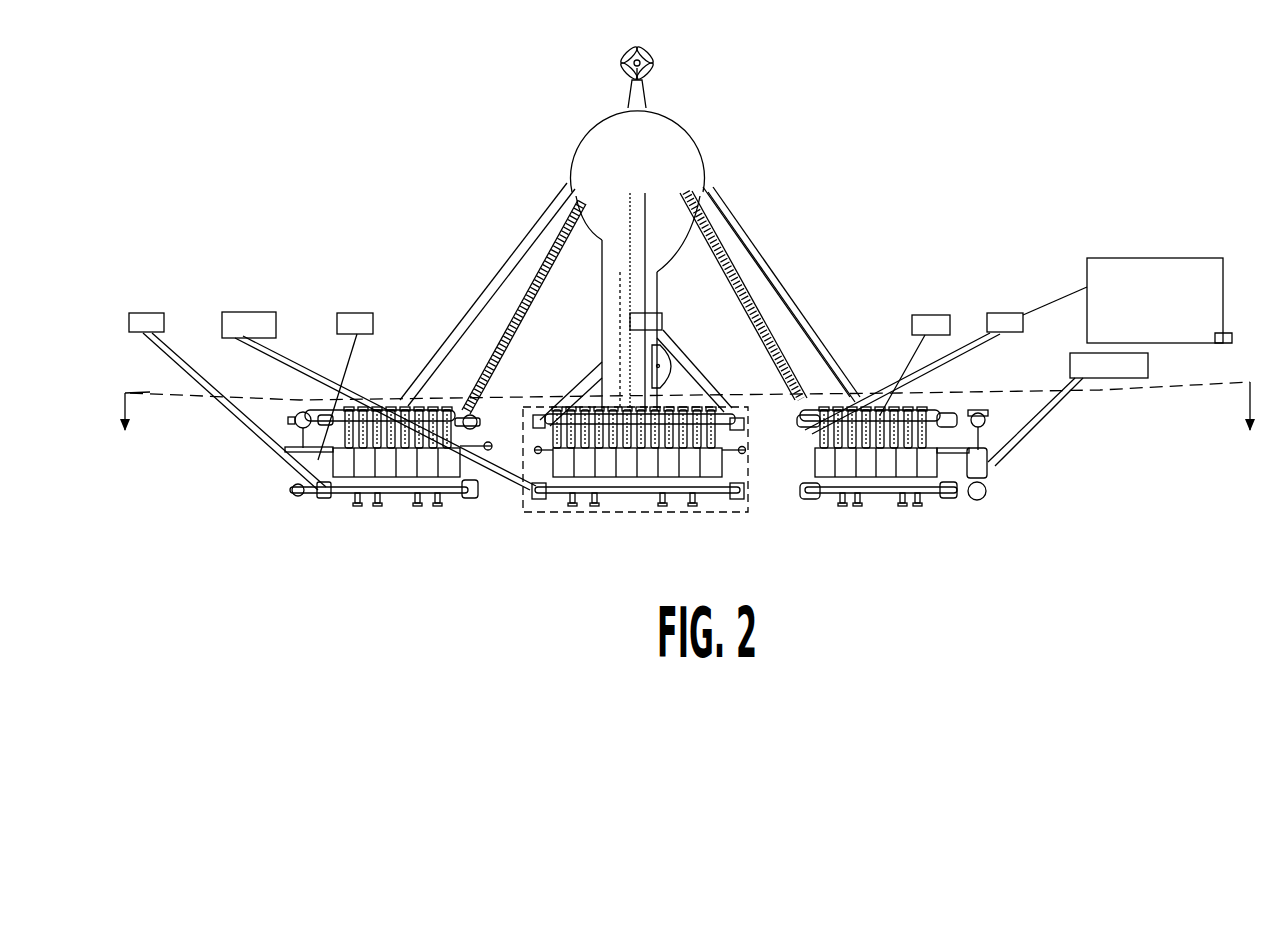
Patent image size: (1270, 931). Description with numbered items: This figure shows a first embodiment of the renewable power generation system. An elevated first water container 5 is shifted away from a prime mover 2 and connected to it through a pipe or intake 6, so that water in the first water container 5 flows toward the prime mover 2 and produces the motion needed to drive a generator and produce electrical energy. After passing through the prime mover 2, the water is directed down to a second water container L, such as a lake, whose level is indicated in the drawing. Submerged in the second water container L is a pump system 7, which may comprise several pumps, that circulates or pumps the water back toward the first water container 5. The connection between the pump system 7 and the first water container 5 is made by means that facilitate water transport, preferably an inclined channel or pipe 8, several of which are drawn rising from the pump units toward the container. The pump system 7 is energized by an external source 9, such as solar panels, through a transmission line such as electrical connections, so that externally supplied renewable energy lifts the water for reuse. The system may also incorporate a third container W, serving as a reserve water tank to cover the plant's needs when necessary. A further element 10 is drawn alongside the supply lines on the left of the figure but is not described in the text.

The prime mover 2 is at (678, 356).
The first water container 5 is at (702, 153).
The intake 6 is at (628, 293).
The pump system 7 is at (625, 512).
The inclined channel or pipe 8 is at (757, 253).
The external source 9 is at (145, 312).
The supply tube 10 is at (254, 440).
The third container W is at (1147, 255).
The second water container L is at (1222, 446).